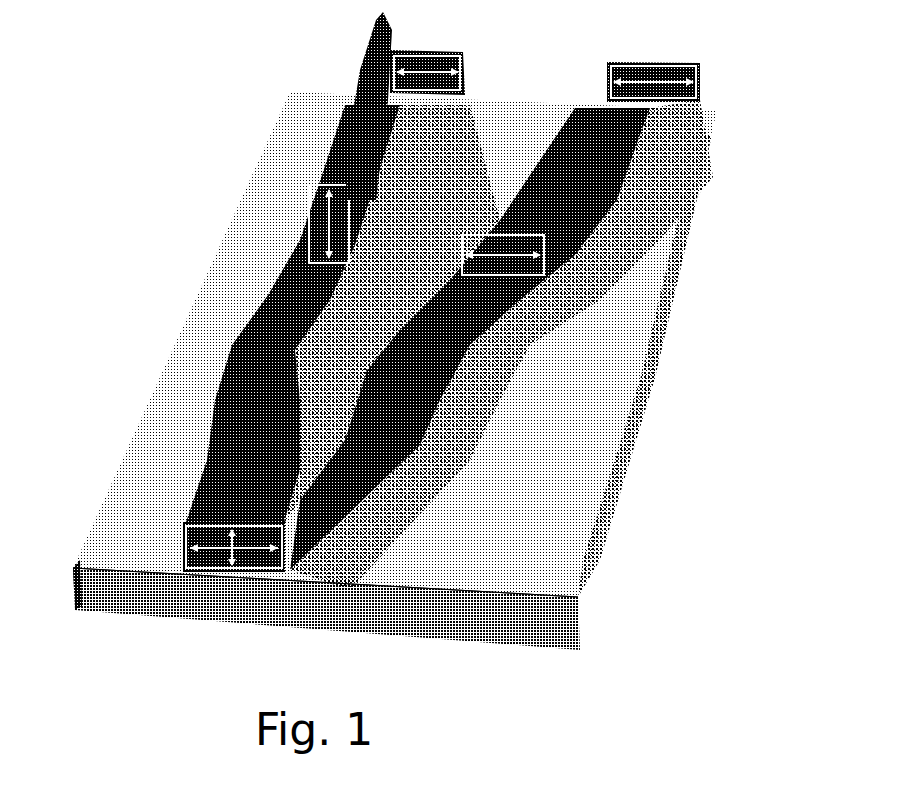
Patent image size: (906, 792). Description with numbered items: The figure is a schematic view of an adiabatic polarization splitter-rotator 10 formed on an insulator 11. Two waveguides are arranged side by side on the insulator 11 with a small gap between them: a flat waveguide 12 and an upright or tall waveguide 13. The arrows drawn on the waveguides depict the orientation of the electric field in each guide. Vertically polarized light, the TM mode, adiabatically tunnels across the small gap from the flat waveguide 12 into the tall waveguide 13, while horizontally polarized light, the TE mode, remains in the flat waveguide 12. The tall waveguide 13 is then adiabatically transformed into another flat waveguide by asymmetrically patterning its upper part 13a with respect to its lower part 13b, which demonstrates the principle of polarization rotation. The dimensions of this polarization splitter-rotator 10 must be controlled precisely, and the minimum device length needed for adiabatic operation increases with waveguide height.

The polarization splitter-rotator 10 is at (395, 364).
The insulator 11 is at (287, 163).
The flat waveguide 12 is at (547, 188).
The tall waveguide 13 is at (327, 288).
The upper part 13a is at (343, 133).
The lower part 13b is at (413, 125).